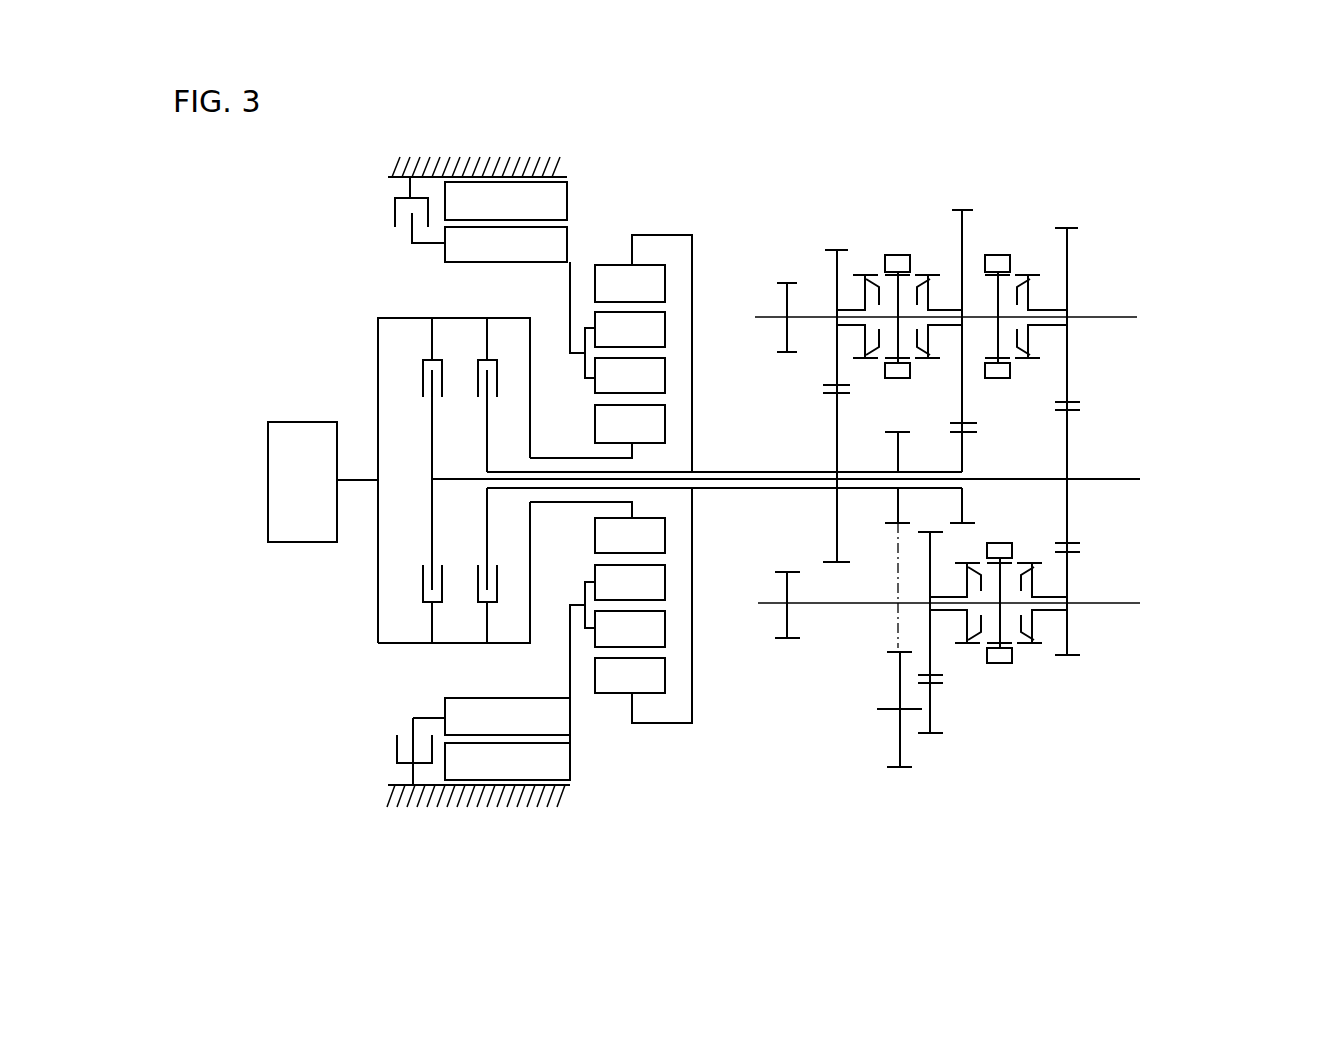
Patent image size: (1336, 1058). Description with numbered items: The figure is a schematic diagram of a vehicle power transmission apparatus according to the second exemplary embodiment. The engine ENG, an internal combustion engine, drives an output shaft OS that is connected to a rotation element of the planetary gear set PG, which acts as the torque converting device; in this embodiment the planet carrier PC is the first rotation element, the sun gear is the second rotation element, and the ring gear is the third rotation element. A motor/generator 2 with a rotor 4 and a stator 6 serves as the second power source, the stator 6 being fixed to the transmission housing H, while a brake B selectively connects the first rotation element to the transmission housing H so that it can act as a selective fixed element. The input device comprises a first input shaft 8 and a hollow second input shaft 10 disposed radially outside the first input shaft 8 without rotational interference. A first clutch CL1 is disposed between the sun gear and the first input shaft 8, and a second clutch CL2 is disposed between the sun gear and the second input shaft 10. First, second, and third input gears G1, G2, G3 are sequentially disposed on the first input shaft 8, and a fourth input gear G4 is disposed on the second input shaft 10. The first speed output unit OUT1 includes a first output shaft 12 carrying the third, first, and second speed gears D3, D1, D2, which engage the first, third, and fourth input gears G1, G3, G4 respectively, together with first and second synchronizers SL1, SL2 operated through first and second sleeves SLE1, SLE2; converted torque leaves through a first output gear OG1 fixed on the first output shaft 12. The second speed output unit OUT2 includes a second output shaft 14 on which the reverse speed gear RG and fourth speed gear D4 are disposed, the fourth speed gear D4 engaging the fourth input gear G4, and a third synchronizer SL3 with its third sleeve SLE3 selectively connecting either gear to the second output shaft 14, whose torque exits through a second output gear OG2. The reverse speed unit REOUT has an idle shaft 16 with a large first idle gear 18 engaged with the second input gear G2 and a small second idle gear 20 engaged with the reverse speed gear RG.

The engine ENG is at (302, 482).
The output shaft OS is at (356, 478).
The first clutch CL1 is at (503, 480).
The second clutch CL2 is at (415, 480).
The planetary gear set PG is at (611, 461).
The planet carrier PC is at (585, 368).
The transmission housing H is at (481, 158).
The brake B is at (406, 481).
The motor/generator 2 is at (614, 188).
The rotor 4 is at (570, 236).
The stator 6 is at (570, 196).
The first input shaft 8 is at (800, 469).
The second input shaft 10 is at (768, 488).
The first output shaft 12 is at (1125, 319).
The second output shaft 14 is at (1125, 605).
The idle shaft 16 is at (885, 706).
The first idle gear 18 is at (898, 745).
The second idle gear 20 is at (931, 722).
The first synchronizer SL1 is at (852, 212).
The second synchronizer SL2 is at (1031, 218).
The third synchronizer SL3 is at (978, 735).
The first sleeve SLE1 is at (897, 246).
The second sleeve SLE2 is at (997, 245).
The third sleeve SLE3 is at (1005, 672).
The first speed gear D1 is at (960, 250).
The second speed gear D2 is at (1068, 261).
The third speed gear D3 is at (835, 262).
The fourth speed gear D4 is at (1070, 638).
The first input gear G1 is at (840, 413).
The second input gear G2 is at (899, 452).
The third input gear G3 is at (964, 460).
The fourth input gear G4 is at (1068, 445).
The first output gear OG1 is at (787, 296).
The second output gear OG2 is at (787, 623).
The reverse speed gear RG is at (931, 650).
The first speed output unit OUT1 is at (1165, 233).
The second speed output unit OUT2 is at (1165, 530).
The reverse speed unit REOUT is at (1165, 653).